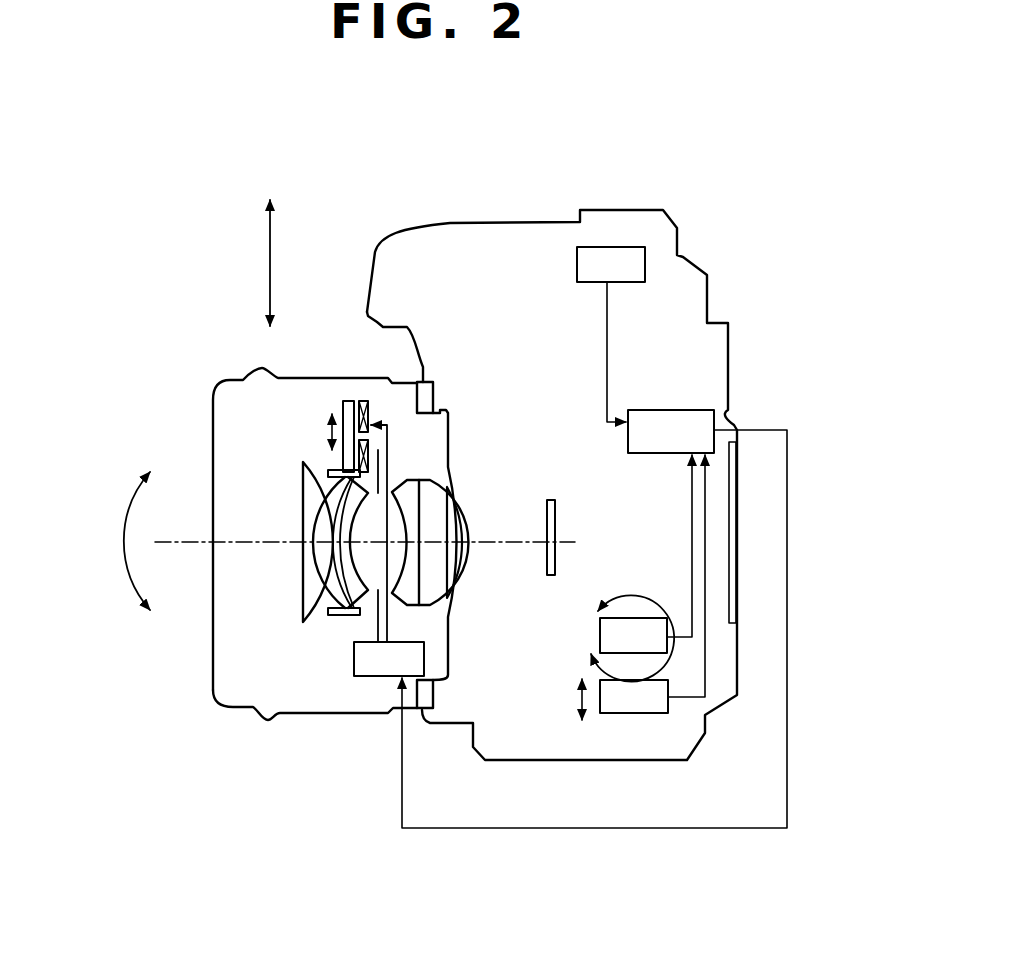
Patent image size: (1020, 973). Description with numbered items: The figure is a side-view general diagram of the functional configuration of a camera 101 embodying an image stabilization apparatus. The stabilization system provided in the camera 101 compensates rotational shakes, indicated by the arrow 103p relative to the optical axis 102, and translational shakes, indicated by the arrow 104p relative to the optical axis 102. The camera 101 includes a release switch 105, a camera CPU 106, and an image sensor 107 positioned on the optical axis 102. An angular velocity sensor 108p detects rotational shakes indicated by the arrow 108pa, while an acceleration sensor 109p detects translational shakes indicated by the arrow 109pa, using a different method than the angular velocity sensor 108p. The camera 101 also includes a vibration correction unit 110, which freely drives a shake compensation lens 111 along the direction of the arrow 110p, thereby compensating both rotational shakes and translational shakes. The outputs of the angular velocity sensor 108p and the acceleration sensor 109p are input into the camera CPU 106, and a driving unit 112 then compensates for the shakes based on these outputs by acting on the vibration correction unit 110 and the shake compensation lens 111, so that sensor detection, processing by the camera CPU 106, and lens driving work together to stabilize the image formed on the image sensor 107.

The camera 101 is at (710, 288).
The optical axis 102 is at (173, 541).
The rotational shake arrow 103p is at (125, 510).
The translational shake arrow 104p is at (268, 278).
The release switch 105 is at (625, 247).
The camera CPU 106 is at (697, 410).
The image sensor 107 is at (547, 502).
The angular velocity sensor 108p is at (600, 637).
The rotational shake detection arrow 108pa is at (652, 600).
The acceleration sensor 109p is at (634, 714).
The translational shake detection arrow 109pa is at (580, 699).
The vibration correction unit 110 is at (343, 407).
The shake compensation lens drive direction arrow 110p is at (330, 437).
The shake compensation lens 111 is at (313, 523).
The driving unit 112 is at (367, 677).